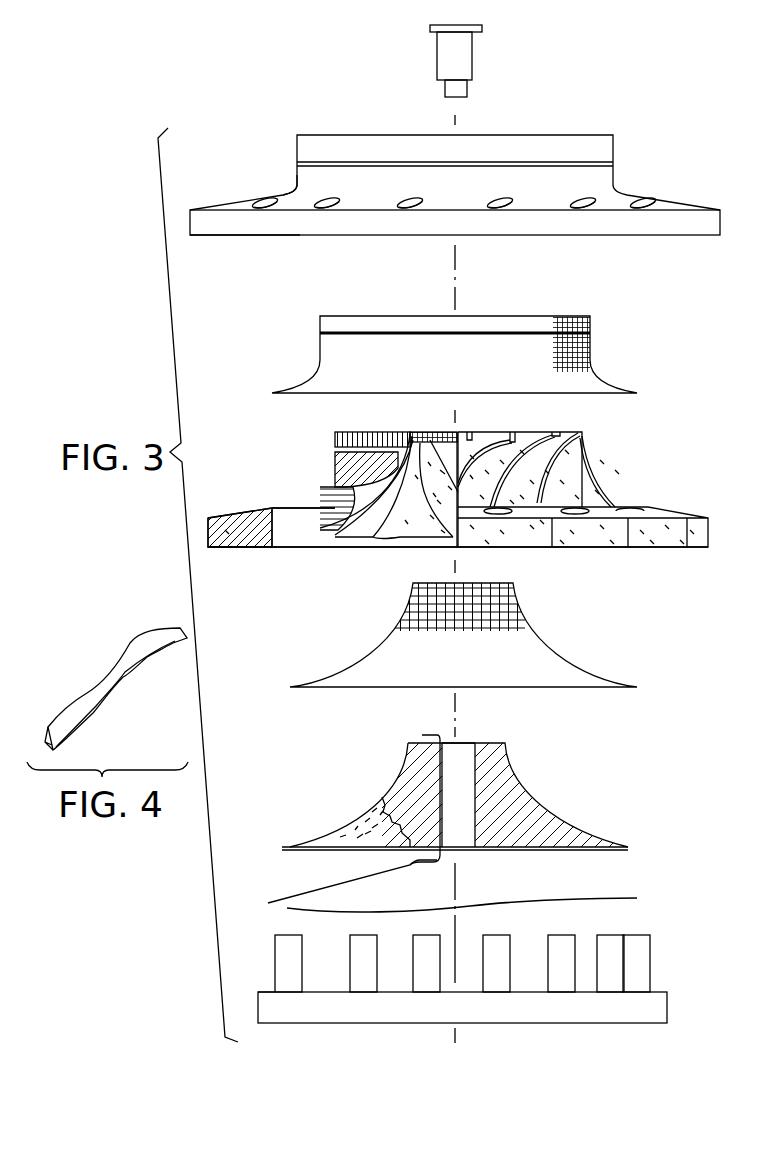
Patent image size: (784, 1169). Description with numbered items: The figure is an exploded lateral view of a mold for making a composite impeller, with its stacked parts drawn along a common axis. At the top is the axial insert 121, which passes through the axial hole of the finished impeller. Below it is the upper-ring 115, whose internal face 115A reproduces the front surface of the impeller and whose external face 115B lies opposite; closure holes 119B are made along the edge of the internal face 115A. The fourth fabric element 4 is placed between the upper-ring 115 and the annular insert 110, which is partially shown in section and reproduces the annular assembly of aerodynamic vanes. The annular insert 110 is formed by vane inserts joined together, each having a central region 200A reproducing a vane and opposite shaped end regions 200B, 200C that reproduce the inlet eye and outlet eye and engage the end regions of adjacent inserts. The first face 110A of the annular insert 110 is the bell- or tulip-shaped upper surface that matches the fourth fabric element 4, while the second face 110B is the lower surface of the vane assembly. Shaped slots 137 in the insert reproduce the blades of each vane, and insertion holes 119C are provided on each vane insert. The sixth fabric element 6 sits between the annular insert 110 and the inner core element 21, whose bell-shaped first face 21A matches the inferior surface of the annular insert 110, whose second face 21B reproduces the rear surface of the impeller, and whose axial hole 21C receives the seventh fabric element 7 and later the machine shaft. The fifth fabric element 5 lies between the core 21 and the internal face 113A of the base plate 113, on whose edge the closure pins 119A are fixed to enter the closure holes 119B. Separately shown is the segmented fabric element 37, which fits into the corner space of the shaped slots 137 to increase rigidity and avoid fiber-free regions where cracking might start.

In FIG. 3, the axial insert 121 is at (467, 68).
In FIG. 3, the upper-ring 115 is at (447, 204).
In FIG. 3, the internal face of the upper-ring 115A is at (268, 245).
In FIG. 3, the external face of the upper-ring 115B is at (247, 198).
In FIG. 3, the closure holes 119B is at (640, 203).
In FIG. 3, the fourth fabric element 4 is at (342, 372).
In FIG. 3, the annular insert 110 is at (451, 500).
In FIG. 3, the first face of the annular insert 110A is at (300, 500).
In FIG. 3, the second face of the annular insert 110B is at (367, 517).
In FIG. 3, the central region of the vane insert 200A is at (433, 482).
In FIG. 3, the shaped end region of the vane insert 200B is at (208, 547).
In FIG. 3, the shaped end region of the vane insert 200C is at (563, 436).
In FIG. 3, the shaped slots 137 is at (578, 447).
In FIG. 3, the insertion holes 119C is at (633, 515).
In FIG. 3, the sixth fabric element 6 is at (407, 637).
In FIG. 3, the inner core element 21 is at (431, 798).
In FIG. 3, the first face of the core 21A is at (542, 790).
In FIG. 3, the second face of the core 21B is at (302, 850).
In FIG. 3, the axial hole 21C is at (457, 760).
In FIG. 3, the seventh fabric element 7 is at (342, 889).
In FIG. 3, the fifth fabric element 5 is at (557, 898).
In FIG. 3, the base plate 113 is at (429, 957).
In FIG. 3, the internal face of the base plate 113A is at (267, 985).
In FIG. 3, the closure pins 119A is at (632, 948).
In FIG. 4, the segmented fabric element 37 is at (88, 697).